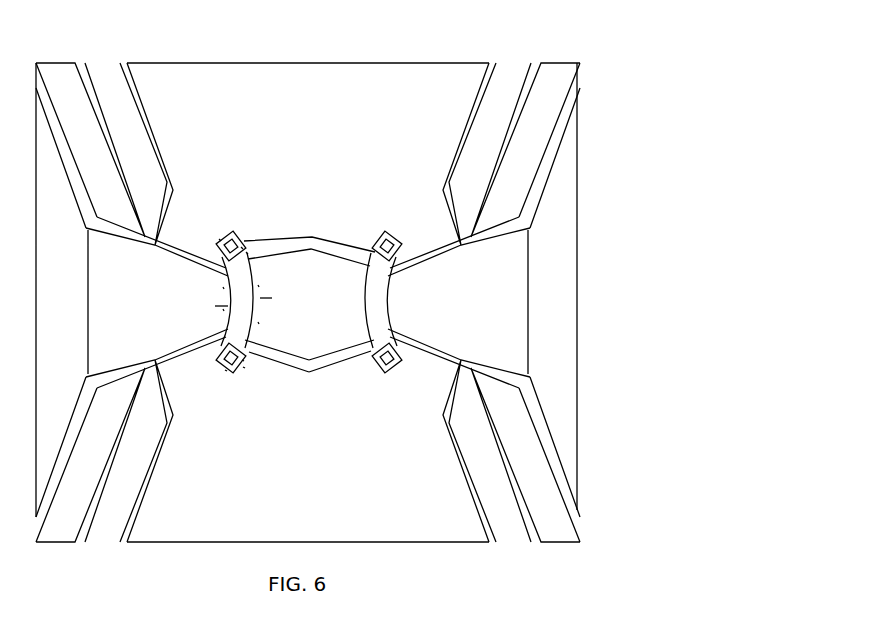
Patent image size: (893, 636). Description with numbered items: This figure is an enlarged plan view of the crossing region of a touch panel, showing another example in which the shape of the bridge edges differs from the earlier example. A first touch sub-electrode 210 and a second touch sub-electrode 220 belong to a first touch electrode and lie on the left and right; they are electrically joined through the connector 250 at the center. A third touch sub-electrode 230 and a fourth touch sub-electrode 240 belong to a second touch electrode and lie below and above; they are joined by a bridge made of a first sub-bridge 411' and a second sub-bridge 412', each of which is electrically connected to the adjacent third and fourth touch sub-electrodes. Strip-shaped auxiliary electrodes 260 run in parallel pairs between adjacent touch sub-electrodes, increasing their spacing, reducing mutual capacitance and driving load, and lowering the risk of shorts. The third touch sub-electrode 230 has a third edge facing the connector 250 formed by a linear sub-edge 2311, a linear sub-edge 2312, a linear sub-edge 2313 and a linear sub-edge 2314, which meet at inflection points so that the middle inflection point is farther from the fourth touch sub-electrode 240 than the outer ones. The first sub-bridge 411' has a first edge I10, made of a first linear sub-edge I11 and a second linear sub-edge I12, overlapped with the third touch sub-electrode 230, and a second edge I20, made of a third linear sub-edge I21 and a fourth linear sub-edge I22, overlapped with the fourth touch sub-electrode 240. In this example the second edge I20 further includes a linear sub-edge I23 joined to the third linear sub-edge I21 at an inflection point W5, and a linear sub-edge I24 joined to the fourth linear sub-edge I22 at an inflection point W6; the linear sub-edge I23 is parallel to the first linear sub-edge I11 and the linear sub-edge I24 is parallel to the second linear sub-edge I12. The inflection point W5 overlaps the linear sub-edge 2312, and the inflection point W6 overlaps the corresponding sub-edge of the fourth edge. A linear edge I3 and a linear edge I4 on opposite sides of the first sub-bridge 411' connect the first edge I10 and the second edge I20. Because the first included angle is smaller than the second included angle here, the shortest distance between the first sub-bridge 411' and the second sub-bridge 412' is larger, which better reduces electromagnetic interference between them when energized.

The first touch sub-electrode 210 is at (132, 290).
The second touch sub-electrode 220 is at (482, 286).
The third touch sub-electrode 230 is at (308, 500).
The fourth touch sub-electrode 240 is at (308, 109).
The connector 250 is at (309, 276).
The corner slots 260 is at (557, 82).
The first sub-bridge 411' is at (234, 285).
The second sub-bridge 412' is at (366, 290).
The linear sub-edge 2311 is at (180, 355).
The linear sub-edge 2312 is at (283, 363).
The linear sub-edge 2313 is at (353, 355).
The linear sub-edge 2314 is at (452, 358).
The linear edge I4 is at (219, 239).
The linear sub-edge I24 is at (241, 247).
The inflection point W5 is at (246, 252).
The second linear sub-edge I12 is at (223, 287).
The first edge I10 is at (222, 302).
The first linear sub-edge I11 is at (223, 309).
The fourth linear sub-edge I22 is at (258, 285).
The second edge I20 is at (267, 295).
The third linear sub-edge I21 is at (258, 322).
The inflection point W6 is at (242, 360).
The linear sub-edge I23 is at (243, 367).
The linear edge I3 is at (225, 370).